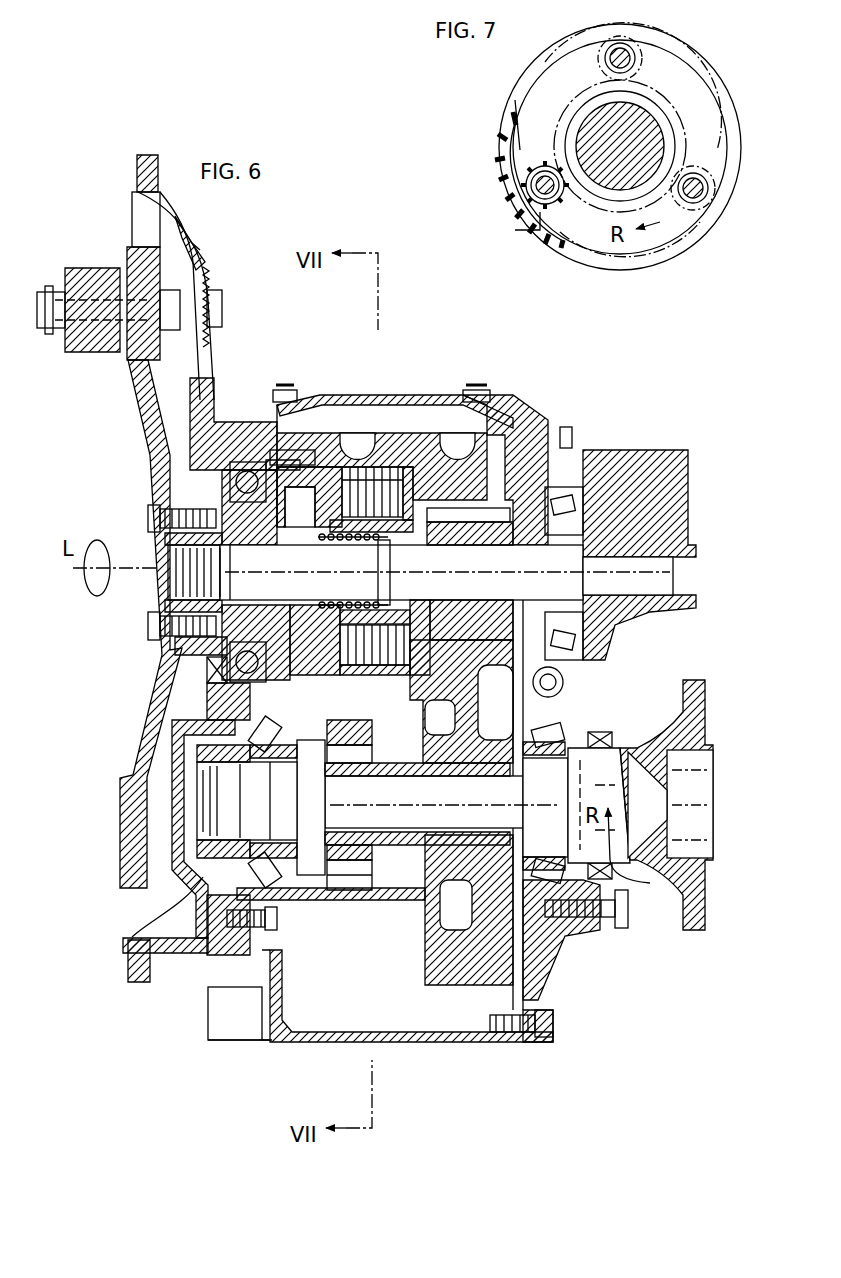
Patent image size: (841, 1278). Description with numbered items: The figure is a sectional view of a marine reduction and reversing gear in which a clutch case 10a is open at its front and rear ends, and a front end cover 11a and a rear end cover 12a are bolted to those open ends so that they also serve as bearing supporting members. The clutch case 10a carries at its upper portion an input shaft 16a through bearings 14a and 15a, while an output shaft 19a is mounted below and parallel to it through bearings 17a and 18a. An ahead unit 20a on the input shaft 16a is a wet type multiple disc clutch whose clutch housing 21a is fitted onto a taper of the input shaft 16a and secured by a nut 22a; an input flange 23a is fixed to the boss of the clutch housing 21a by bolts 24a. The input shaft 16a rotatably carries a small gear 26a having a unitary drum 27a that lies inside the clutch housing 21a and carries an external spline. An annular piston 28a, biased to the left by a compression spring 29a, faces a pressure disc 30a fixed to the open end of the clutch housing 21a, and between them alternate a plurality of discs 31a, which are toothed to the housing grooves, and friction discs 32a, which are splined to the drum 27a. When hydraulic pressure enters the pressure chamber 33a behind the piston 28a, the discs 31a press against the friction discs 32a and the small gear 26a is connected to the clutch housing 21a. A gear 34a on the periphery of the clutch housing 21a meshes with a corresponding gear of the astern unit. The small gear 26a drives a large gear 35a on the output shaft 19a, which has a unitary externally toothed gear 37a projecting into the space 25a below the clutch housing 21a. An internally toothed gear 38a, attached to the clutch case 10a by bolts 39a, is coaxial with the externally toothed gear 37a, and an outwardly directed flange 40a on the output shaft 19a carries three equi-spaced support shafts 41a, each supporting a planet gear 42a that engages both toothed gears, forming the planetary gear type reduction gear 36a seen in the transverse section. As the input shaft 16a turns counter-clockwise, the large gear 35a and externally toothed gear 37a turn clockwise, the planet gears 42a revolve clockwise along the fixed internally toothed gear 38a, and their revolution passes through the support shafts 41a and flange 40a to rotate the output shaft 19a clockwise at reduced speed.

In FIG. 6, the clutch case 10a is at (275, 1032).
In FIG. 6, the front end cover 11a is at (141, 976).
In FIG. 6, the rear end cover 12a is at (552, 985).
In FIG. 6, the bearing 14a is at (242, 450).
In FIG. 6, the bearing 15a is at (555, 505).
In FIG. 6, the input shaft 16a is at (165, 542).
In FIG. 6, the bearing 17a is at (208, 933).
In FIG. 6, the bearing 18a is at (532, 905).
In FIG. 7, the output shaft 19a is at (655, 140).
In FIG. 6, the output shaft 19a is at (446, 807).
In FIG. 6, the ahead unit 20a is at (420, 470).
In FIG. 6, the clutch housing 21a is at (330, 500).
In FIG. 6, the nut 22a is at (162, 600).
In FIG. 6, the input flange 23a is at (156, 410).
In FIG. 6, the bolts 24a is at (150, 628).
In FIG. 6, the space 25a is at (418, 1018).
In FIG. 6, the small gear 26a is at (482, 512).
In FIG. 6, the drum 27a is at (410, 520).
In FIG. 6, the annular piston 28a is at (360, 500).
In FIG. 6, the compression spring 29a is at (337, 600).
In FIG. 6, the pressure disc 30a is at (440, 500).
In FIG. 6, the discs 31a is at (434, 445).
In FIG. 6, the friction discs 32a is at (403, 456).
In FIG. 6, the pressure chamber 33a is at (305, 480).
In FIG. 6, the gear 34a is at (298, 452).
In FIG. 6, the large gear 35a is at (455, 985).
In FIG. 7, the planetary gear type reduction gear 36a is at (748, 138).
In FIG. 6, the planetary gear type reduction gear 36a is at (349, 952).
In FIG. 7, the externally toothed gear 37a is at (525, 150).
In FIG. 6, the externally toothed gear 37a is at (394, 848).
In FIG. 7, the internally toothed gear 38a is at (502, 170).
In FIG. 6, the internally toothed gear 38a is at (305, 898).
In FIG. 6, the bolts 39a is at (265, 920).
In FIG. 6, the flange 40a is at (323, 789).
In FIG. 7, the support shafts 41a is at (536, 190).
In FIG. 6, the support shafts 41a is at (350, 763).
In FIG. 7, the planet gears 42a is at (523, 160).
In FIG. 6, the planet gears 42a is at (382, 763).